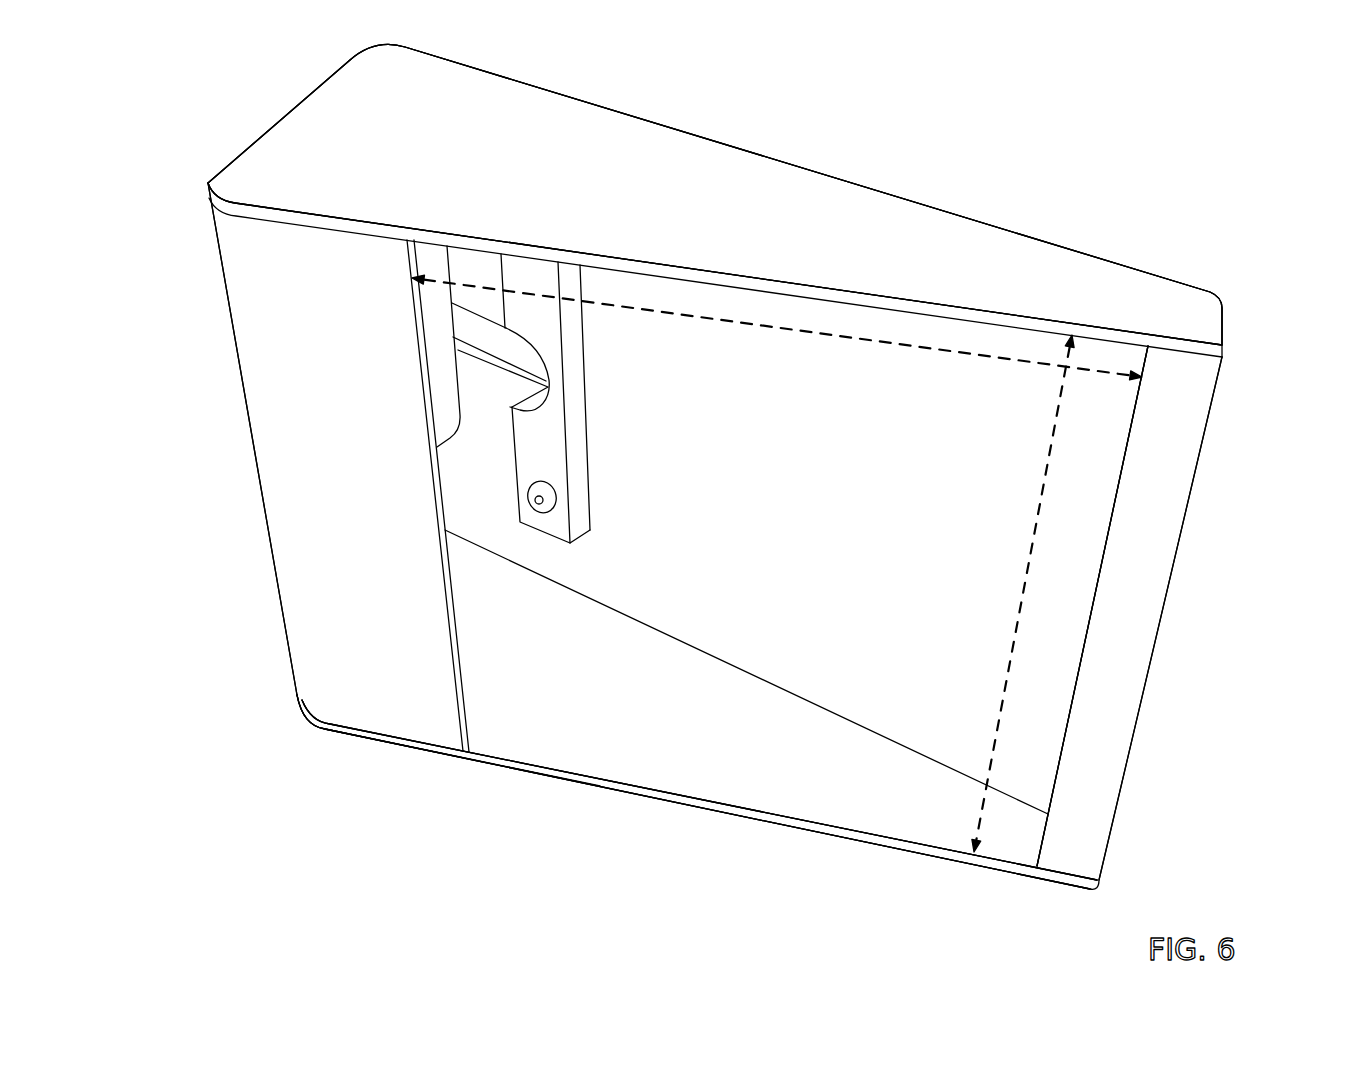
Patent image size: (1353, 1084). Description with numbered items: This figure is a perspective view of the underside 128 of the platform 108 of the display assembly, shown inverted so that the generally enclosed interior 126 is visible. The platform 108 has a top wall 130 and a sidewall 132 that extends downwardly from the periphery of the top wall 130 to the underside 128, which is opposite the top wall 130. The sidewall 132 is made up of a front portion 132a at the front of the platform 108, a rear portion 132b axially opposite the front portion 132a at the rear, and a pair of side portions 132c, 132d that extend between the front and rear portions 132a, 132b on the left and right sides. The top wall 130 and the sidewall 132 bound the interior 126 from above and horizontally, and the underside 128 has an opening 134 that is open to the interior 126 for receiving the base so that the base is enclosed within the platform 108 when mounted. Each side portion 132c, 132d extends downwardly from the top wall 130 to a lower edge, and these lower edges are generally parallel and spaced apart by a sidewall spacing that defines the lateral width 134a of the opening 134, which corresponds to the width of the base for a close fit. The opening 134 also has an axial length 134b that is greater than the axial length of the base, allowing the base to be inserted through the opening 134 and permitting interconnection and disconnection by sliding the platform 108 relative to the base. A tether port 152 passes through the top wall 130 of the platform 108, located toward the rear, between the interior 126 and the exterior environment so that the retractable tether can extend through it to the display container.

The platform 108 is at (165, 70).
The interior 126 is at (542, 703).
The underside 128 is at (358, 717).
The top wall 130 is at (863, 485).
The sidewall 132 is at (715, 466).
The front portion 132a is at (1240, 333).
The rear portion 132b is at (212, 331).
The side portion 132c is at (783, 195).
The side portion 132d is at (930, 820).
The opening 134 is at (455, 659).
The lateral width 134a is at (1015, 630).
The axial length 134b is at (837, 335).
The tether port 152 is at (475, 335).